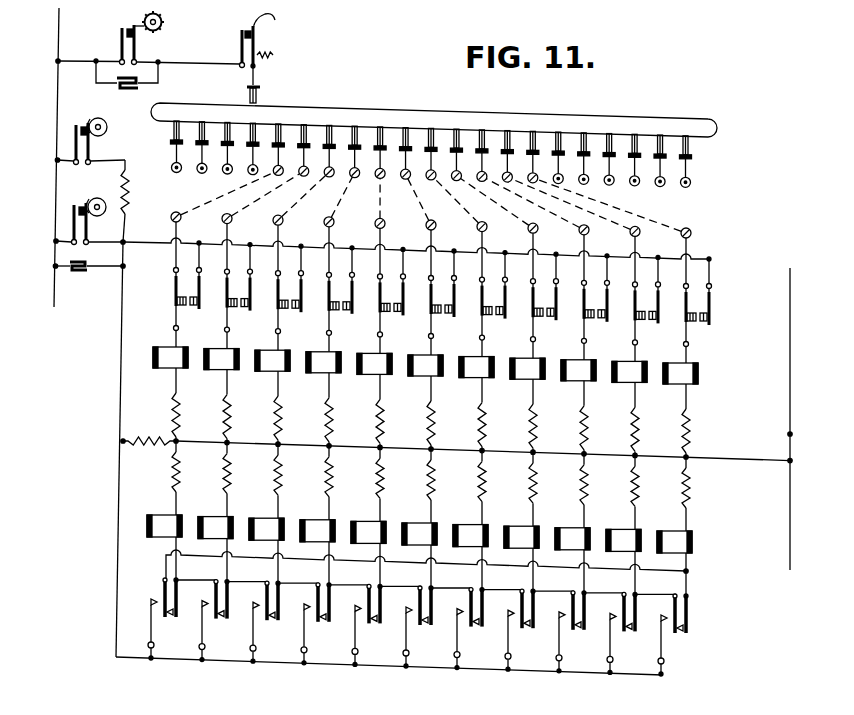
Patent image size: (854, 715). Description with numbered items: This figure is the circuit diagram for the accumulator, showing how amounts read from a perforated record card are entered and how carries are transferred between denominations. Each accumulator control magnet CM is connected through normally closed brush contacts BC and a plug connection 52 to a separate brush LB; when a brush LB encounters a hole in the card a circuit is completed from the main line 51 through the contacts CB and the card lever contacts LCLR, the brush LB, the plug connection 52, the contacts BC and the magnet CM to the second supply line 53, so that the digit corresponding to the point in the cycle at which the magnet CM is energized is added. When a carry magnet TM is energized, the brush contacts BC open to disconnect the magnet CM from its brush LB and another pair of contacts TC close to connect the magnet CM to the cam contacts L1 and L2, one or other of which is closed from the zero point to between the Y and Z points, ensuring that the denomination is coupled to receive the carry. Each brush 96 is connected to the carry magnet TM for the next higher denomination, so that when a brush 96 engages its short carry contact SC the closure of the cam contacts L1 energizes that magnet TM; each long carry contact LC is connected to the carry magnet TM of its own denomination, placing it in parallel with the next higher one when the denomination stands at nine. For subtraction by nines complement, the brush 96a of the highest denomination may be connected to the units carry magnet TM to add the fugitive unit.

The contacts CB is at (121, 45).
The card lever contacts LCLR is at (248, 31).
The main line 51 is at (58, 100).
The cam contacts L2 is at (92, 140).
The cam contacts L1 is at (85, 219).
The brush LB is at (664, 152).
The plug connection 52 is at (417, 192).
The brush contacts BC is at (183, 309).
The contacts TC is at (289, 308).
The accumulator control magnet CM is at (268, 362).
The second supply line 53 is at (790, 434).
The carry magnet TM is at (260, 520).
The brush 96a is at (165, 596).
The short carry contact SC is at (150, 632).
The long carry contact LC is at (171, 615).
The brush 96 is at (217, 619).